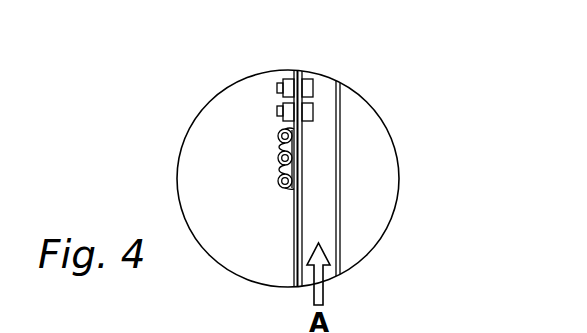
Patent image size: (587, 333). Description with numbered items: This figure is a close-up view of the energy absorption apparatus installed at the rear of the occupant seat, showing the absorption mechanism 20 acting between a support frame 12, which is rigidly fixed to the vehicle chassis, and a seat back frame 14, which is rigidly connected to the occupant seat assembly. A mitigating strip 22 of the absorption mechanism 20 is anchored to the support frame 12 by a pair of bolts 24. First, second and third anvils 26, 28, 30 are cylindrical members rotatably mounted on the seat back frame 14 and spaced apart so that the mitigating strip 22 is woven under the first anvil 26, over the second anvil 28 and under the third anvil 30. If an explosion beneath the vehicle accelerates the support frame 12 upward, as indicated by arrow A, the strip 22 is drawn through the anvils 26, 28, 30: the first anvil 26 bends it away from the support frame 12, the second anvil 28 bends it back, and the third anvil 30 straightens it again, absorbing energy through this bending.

The support frame 12 is at (322, 228).
The seat back frame 14 is at (238, 215).
The absorption mechanism 20 is at (236, 100).
The mitigating strip 22 is at (296, 131).
The bolts 24 is at (312, 110).
The first anvil 26 is at (279, 133).
The second anvil 28 is at (279, 159).
The third anvil 30 is at (282, 187).